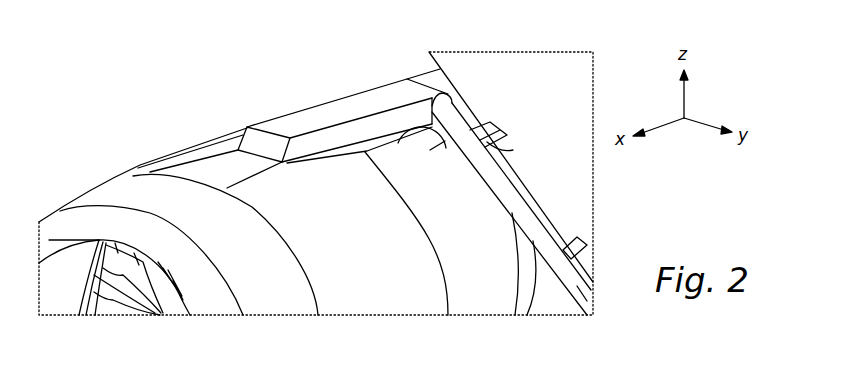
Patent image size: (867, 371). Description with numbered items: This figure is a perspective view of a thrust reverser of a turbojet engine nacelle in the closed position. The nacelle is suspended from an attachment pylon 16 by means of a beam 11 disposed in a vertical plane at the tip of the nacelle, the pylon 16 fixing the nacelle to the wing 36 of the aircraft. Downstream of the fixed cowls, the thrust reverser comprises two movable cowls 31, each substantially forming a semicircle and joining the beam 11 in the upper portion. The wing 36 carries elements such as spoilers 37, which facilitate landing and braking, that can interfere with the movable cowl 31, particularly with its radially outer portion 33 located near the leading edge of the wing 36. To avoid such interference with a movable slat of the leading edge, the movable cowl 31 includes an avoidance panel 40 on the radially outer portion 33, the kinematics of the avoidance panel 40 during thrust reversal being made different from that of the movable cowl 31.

The beam 11 is at (375, 112).
The attachment pylon 16 is at (343, 109).
The movable cowl 31 is at (481, 293).
The radially outer portion 33 is at (449, 166).
The wing 36 is at (575, 187).
The spoilers 37 is at (588, 302).
The avoidance panel 40 is at (473, 128).